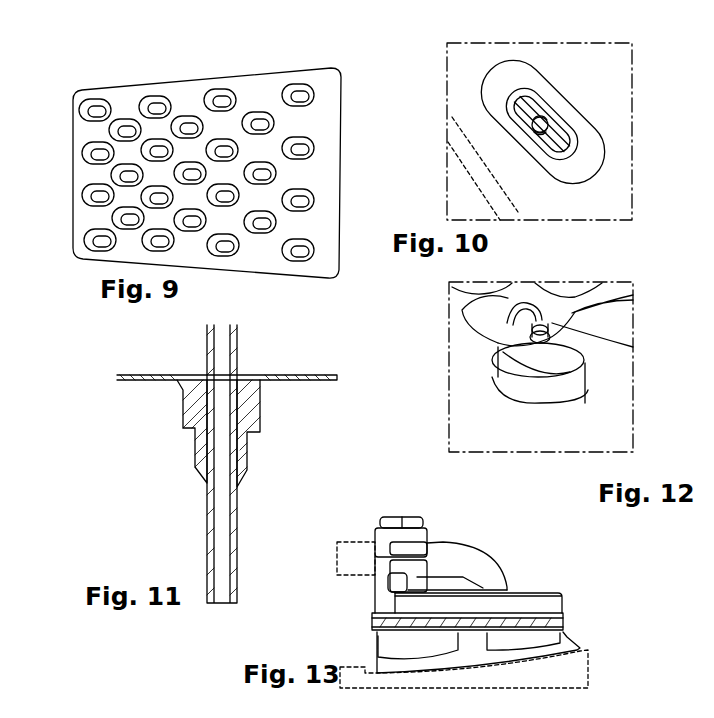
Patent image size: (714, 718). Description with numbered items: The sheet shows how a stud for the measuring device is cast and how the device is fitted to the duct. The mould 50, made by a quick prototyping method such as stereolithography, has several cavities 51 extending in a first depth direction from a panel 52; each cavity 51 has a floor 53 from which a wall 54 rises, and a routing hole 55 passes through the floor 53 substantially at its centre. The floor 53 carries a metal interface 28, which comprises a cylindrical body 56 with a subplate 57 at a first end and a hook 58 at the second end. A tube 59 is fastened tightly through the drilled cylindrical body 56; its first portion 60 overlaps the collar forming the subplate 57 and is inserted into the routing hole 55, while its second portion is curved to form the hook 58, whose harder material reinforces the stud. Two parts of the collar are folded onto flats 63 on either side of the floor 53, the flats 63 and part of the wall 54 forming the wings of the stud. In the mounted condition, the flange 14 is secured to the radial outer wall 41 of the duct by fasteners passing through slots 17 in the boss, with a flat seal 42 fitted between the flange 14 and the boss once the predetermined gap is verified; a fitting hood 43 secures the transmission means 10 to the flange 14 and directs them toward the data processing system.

In FIG. 13, the transmission means 10 is at (448, 560).
In FIG. 13, the flange 14 is at (518, 592).
In FIG. 13, the slots 17 is at (558, 632).
In FIG. 10, the metal interface 28 is at (551, 100).
In FIG. 12, the metal interface 28 is at (548, 305).
In FIG. 11, the metal interface 28 is at (186, 492).
In FIG. 13, the radial outer wall 41 is at (352, 666).
In FIG. 13, the seal 42 is at (563, 618).
In FIG. 13, the fitting hood 43 is at (375, 529).
In FIG. 9, the mould 50 is at (115, 80).
In FIG. 9, the cavities 51 is at (96, 100).
In FIG. 10, the cavities 51 is at (577, 113).
In FIG. 12, the cavities 51 is at (615, 330).
In FIG. 9, the panel 52 is at (126, 106).
In FIG. 10, the panel 52 is at (592, 64).
In FIG. 12, the panel 52 is at (478, 420).
In FIG. 9, the floor 53 is at (318, 198).
In FIG. 10, the floor 53 is at (577, 150).
In FIG. 12, the floor 53 is at (585, 365).
In FIG. 10, the wall 54 is at (515, 78).
In FIG. 12, the wall 54 is at (552, 388).
In FIG. 9, the routing hole 55 is at (224, 96).
In FIG. 12, the cylindrical body 56 is at (578, 313).
In FIG. 11, the cylindrical body 56 is at (207, 506).
In FIG. 12, the subplate 57 is at (515, 380).
In FIG. 11, the subplate 57 is at (337, 374).
In FIG. 12, the hook 58 is at (515, 300).
In FIG. 11, the hook 58 is at (257, 404).
In FIG. 11, the tube 59 is at (237, 519).
In FIG. 11, the first portion 60 is at (206, 343).
In FIG. 10, the flats 63 is at (538, 166).
In FIG. 12, the flats 63 is at (492, 362).